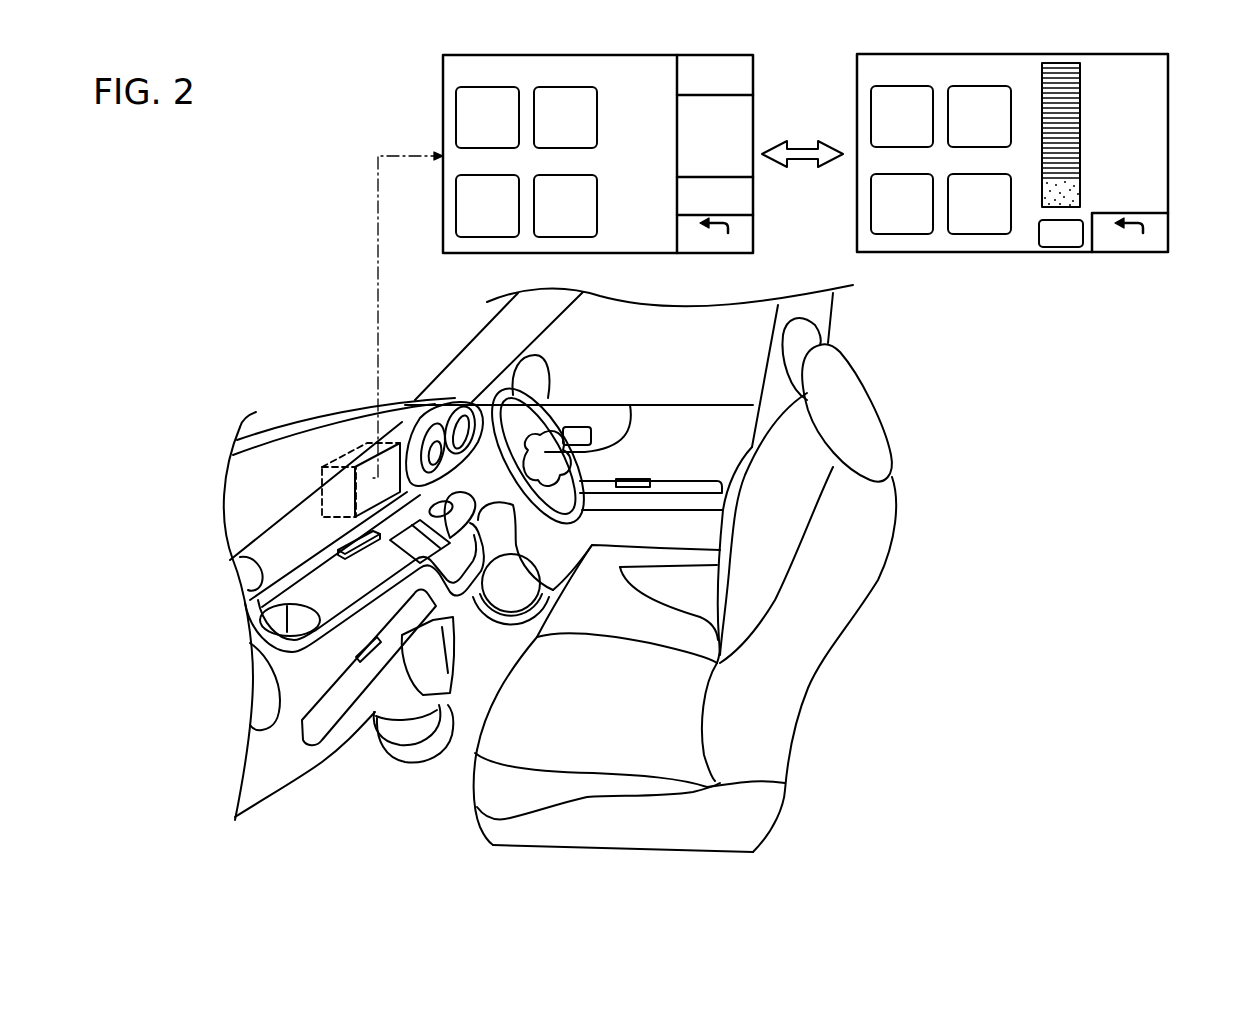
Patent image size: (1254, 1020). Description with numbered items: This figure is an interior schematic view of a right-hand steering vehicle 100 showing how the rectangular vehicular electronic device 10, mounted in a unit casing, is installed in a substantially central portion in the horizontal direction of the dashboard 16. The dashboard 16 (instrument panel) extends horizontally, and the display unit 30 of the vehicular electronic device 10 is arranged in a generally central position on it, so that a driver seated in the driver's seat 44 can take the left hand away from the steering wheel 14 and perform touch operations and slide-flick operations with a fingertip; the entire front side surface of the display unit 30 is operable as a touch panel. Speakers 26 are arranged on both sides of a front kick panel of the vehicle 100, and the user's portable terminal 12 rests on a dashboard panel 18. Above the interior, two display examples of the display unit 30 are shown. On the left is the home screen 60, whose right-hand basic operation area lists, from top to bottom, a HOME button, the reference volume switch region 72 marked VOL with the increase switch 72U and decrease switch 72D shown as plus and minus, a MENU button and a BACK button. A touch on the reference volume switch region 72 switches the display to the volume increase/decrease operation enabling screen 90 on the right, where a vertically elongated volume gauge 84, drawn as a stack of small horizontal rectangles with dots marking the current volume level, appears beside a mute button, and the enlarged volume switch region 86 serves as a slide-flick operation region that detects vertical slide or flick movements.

The vehicle 100 is at (302, 154).
The vehicular electronic device 10 is at (340, 466).
The portable terminal 12 is at (340, 537).
The steering wheel 14 is at (492, 390).
The dashboard 16 is at (273, 455).
The dashboard panel 18 is at (315, 568).
The speakers 26 is at (500, 600).
The display unit 30 is at (443, 86).
The driver's seat 44 is at (590, 558).
The home screen 60 is at (630, 236).
The reference volume switch region 72 is at (736, 131).
The increase switch 72U is at (1142, 115).
The decrease switch 72D is at (1142, 161).
The volume gauge 84 is at (1040, 72).
The enlarged volume switch region 86 is at (1088, 92).
The volume increase/decrease operation enabling screen 90 is at (1025, 222).